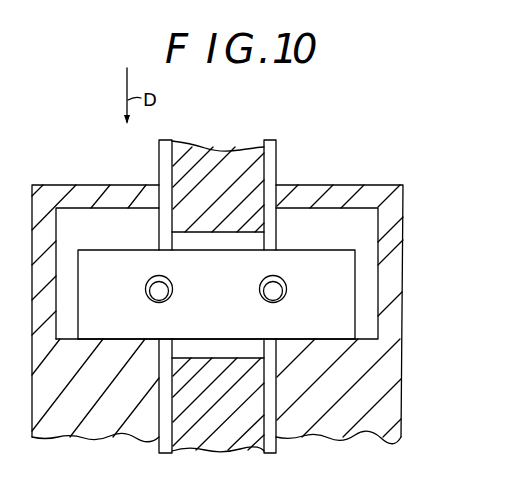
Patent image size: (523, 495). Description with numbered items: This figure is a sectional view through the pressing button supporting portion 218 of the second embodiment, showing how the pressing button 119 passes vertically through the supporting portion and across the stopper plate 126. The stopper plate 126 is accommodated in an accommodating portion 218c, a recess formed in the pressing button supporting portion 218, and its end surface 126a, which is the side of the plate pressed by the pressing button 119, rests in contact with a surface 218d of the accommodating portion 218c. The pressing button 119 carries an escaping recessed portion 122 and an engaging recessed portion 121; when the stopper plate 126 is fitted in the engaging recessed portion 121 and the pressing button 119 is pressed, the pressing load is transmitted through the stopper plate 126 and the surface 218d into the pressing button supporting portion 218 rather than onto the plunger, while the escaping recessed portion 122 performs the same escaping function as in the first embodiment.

The pressing button 119 is at (253, 172).
The engaging recessed portion 121 is at (235, 358).
The escaping recessed portion 122 is at (250, 243).
The stopper plate 126 is at (335, 283).
The end surface 126a is at (297, 340).
The pressing button supporting portion 218 is at (380, 418).
The accommodating portion 218c is at (368, 240).
The surface 218d is at (337, 340).